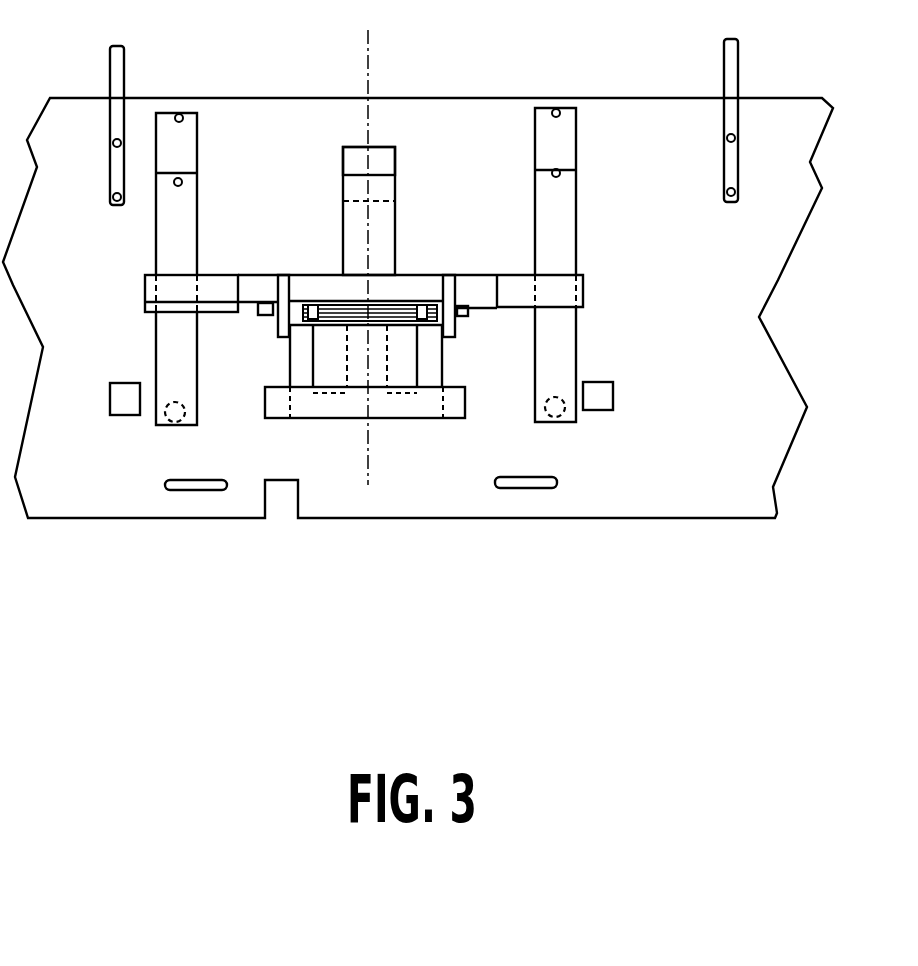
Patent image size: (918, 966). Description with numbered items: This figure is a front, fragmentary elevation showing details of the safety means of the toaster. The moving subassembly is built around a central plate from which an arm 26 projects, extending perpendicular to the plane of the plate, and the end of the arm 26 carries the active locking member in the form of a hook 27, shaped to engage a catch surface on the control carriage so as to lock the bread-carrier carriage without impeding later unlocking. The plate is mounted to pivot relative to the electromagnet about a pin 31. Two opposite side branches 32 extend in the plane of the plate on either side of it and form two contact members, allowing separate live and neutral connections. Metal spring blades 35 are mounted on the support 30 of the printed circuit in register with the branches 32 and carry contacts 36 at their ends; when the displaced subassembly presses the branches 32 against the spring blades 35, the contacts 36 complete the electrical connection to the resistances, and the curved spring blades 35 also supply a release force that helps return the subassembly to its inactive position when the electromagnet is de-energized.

The arm 26 is at (383, 235).
The hook 27 is at (382, 160).
The support of the printed circuit 30 is at (790, 118).
The pin 31 is at (270, 314).
The side branch 32 is at (218, 292).
The spring blade 35 is at (172, 240).
The contact 36 is at (168, 423).